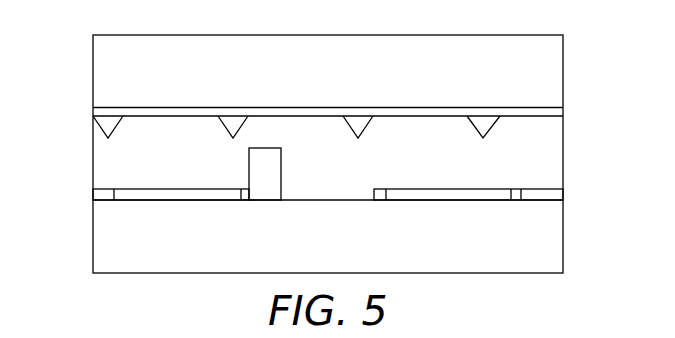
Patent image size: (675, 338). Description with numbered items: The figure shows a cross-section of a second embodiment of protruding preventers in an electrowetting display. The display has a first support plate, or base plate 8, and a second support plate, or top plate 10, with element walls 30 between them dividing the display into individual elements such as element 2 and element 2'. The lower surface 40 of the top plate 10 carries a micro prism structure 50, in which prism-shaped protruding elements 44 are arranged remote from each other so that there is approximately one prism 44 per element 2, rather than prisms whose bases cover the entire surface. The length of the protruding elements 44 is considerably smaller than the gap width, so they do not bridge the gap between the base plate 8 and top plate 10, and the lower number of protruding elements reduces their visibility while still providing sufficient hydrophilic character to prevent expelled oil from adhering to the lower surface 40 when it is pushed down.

The top plate 10 is at (108, 75).
The lower surface 40 is at (410, 113).
The protruding elements 44 is at (108, 128).
The element walls 30 is at (105, 193).
The base plate 8 is at (108, 239).
The element 2' is at (327, 214).
The element 2 is at (468, 214).
The micro prism structure 50 is at (536, 126).